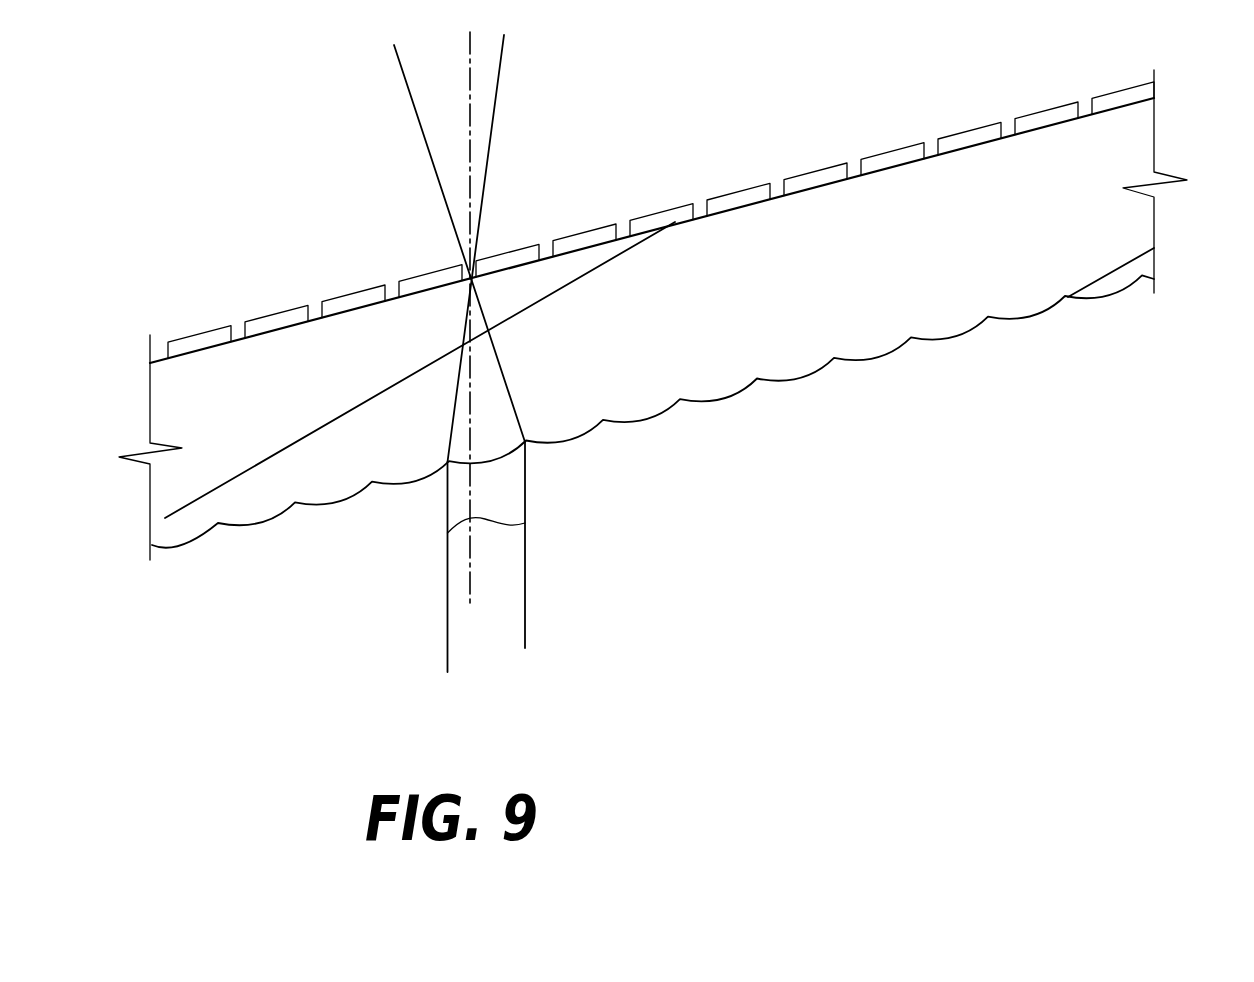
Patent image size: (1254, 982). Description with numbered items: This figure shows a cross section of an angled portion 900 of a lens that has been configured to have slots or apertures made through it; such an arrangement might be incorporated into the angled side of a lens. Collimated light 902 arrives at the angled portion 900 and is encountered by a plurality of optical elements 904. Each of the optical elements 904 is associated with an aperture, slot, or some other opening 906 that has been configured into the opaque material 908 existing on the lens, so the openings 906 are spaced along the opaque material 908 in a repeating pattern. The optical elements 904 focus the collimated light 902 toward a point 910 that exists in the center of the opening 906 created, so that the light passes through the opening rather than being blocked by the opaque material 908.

The angled portion 900 is at (332, 569).
The collimated light 902 is at (525, 545).
The optical elements 904 is at (785, 382).
The opening 906 is at (545, 250).
The opaque material 908 is at (585, 230).
The point 910 is at (468, 269).